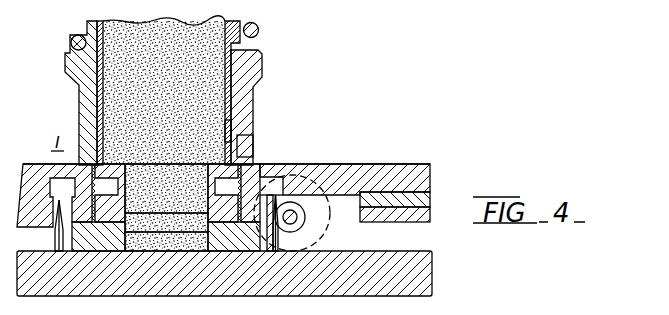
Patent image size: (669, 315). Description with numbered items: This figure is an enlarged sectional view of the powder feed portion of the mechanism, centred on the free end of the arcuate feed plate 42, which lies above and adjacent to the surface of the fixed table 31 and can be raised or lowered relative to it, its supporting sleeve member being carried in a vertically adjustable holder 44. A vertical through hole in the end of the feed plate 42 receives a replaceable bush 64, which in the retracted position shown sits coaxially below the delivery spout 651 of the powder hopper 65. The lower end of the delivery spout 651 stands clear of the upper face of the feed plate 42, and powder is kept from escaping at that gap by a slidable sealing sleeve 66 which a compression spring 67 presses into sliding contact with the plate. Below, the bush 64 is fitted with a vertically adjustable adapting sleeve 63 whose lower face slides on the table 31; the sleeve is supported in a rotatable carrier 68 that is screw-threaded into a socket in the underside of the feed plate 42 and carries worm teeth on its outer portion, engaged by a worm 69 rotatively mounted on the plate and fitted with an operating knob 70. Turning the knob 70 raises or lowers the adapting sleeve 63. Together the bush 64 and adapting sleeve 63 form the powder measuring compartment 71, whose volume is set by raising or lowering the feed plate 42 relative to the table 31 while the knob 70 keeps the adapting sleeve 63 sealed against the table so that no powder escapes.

The fixed table 31 is at (423, 283).
The arcuate feed plate 42 is at (357, 172).
The vertically adjustable holder 44 is at (420, 200).
The adapting sleeve 63 is at (168, 207).
The replaceable bush 64 is at (250, 164).
The powder hopper 65 is at (241, 43).
The delivery spout 651 is at (233, 128).
The slidable sealing sleeve 66 is at (92, 106).
The compression spring 67 is at (258, 30).
The rotatable carrier 68 is at (56, 247).
The worm 69 is at (305, 222).
The operating knob 70 is at (328, 211).
The powder measuring compartment 71 is at (248, 146).